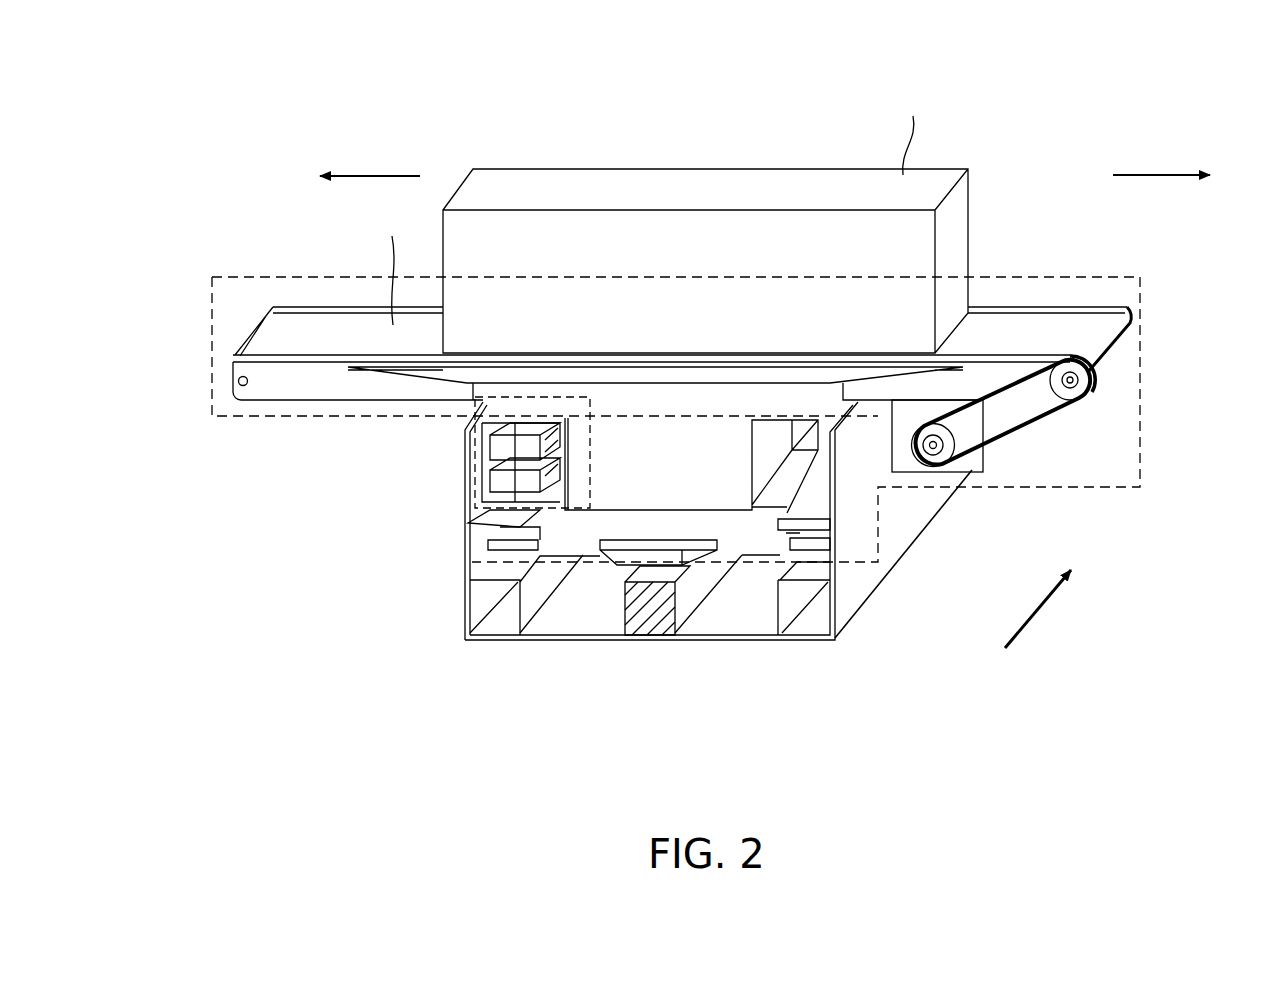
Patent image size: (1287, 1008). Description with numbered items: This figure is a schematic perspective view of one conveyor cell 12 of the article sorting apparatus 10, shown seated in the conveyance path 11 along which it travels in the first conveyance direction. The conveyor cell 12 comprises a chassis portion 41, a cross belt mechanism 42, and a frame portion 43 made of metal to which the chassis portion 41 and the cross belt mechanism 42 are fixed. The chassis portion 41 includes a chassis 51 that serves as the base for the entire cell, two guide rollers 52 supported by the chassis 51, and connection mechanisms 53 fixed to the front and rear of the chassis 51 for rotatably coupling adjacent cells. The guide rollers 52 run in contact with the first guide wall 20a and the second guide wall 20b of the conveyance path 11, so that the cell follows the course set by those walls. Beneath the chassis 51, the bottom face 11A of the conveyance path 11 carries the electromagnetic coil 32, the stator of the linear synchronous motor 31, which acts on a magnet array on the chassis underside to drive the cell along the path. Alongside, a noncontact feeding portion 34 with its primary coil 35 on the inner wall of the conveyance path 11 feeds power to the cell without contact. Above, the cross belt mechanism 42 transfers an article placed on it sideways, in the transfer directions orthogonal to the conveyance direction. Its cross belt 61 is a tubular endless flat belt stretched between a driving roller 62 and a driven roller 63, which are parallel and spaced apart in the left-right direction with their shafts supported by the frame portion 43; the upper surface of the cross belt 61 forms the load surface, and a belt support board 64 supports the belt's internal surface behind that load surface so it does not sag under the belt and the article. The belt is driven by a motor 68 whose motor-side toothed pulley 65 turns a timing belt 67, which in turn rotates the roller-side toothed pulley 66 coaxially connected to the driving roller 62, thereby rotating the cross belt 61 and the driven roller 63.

The printer 10 is at (722, 392).
The conveyor cell 12 is at (980, 138).
The conveyance path 11 is at (463, 622).
The bottom face of the conveyance path 11A is at (695, 622).
The first guide wall 20a is at (470, 560).
The second guide wall 20b is at (470, 570).
The linear synchronous motor 31 is at (616, 608).
The electromagnetic coil 32 is at (645, 620).
The noncontact feeding portion 34 is at (464, 432).
The primary coil 35 is at (478, 460).
The chassis portion 41 is at (582, 572).
The cross belt mechanism 42 is at (1062, 444).
The frame portion 43 is at (300, 390).
The chassis 51 is at (770, 515).
The guide roller 52 is at (475, 540).
The connection mechanism 53 is at (688, 550).
The cross belt 61 is at (1000, 320).
The driving roller 62 is at (1095, 372).
The driven roller 63 is at (245, 390).
The belt support board 64 is at (760, 370).
The motor-side toothed pulley 65 is at (947, 448).
The roller-side toothed pulley 66 is at (1090, 390).
The timing belt 67 is at (1033, 415).
The motor 68 is at (970, 468).